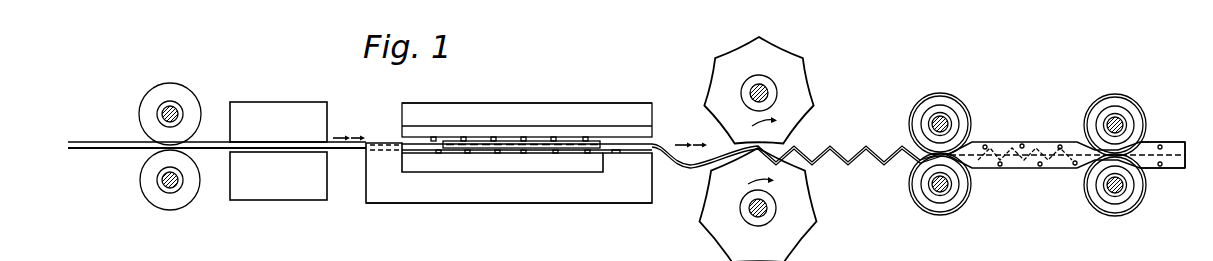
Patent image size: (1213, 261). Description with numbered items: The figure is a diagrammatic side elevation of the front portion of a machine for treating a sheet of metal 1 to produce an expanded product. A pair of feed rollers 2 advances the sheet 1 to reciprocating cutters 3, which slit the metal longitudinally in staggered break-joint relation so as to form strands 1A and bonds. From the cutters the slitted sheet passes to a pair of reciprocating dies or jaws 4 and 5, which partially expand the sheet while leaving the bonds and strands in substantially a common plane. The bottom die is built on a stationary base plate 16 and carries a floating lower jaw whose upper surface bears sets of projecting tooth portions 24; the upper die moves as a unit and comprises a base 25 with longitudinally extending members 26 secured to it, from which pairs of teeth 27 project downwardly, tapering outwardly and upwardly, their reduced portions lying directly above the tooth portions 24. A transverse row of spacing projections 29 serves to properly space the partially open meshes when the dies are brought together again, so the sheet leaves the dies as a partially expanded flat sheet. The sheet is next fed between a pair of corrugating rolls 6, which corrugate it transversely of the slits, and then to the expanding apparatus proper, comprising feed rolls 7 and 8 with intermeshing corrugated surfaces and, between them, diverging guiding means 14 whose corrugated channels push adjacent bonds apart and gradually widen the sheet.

The sheet of metal 1 is at (87, 146).
The feed rollers 2 is at (190, 96).
The reciprocating cutters 3 is at (285, 112).
The upper reciprocating die or jaw 4 is at (487, 113).
The lower reciprocating die or jaw 5 is at (487, 192).
The corrugating rolls 6 is at (797, 85).
The feed rolls 7 is at (962, 112).
The feed rolls 8 is at (1132, 110).
The diverging guiding means 14 is at (1173, 142).
The strands 1A is at (1007, 142).
The stationary base plate 16 is at (541, 194).
The projecting tooth portions 24 is at (464, 152).
The base of upper die 25 is at (585, 113).
The longitudinally extending members 26 is at (545, 135).
The teeth 27 is at (433, 140).
The spacing projections 29 is at (626, 153).